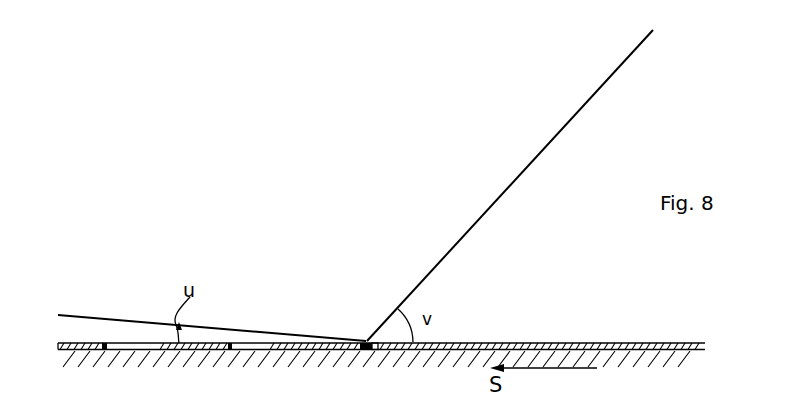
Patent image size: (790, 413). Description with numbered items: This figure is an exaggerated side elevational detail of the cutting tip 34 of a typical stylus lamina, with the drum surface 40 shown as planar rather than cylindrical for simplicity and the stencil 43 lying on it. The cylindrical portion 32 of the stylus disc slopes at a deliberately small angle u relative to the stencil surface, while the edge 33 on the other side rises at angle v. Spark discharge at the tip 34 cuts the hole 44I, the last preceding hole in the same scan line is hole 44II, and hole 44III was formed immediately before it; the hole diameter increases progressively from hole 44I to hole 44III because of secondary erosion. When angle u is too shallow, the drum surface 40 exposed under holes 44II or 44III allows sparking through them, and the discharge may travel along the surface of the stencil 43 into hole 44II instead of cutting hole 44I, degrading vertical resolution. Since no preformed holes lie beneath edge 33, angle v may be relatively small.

The cylindrical portion 32 is at (87, 322).
The edge 33 is at (557, 133).
The cutting tip 34 is at (370, 343).
The drum surface 40 is at (528, 349).
The stencil 43 is at (616, 343).
The hole 44I is at (366, 338).
The hole 44II is at (250, 338).
The hole 44III is at (127, 338).